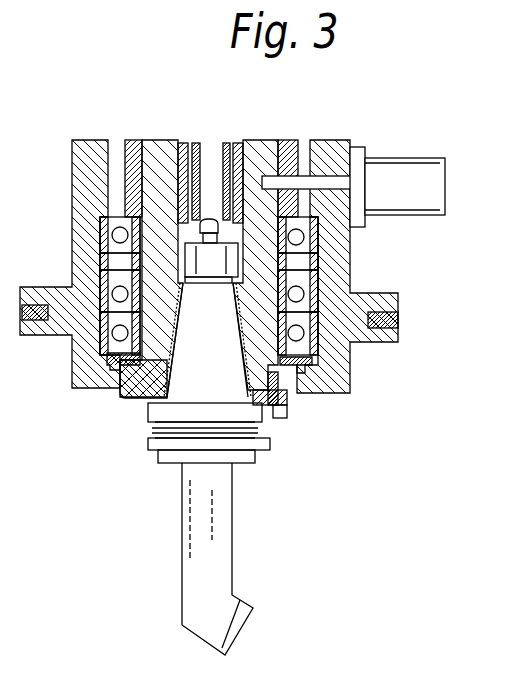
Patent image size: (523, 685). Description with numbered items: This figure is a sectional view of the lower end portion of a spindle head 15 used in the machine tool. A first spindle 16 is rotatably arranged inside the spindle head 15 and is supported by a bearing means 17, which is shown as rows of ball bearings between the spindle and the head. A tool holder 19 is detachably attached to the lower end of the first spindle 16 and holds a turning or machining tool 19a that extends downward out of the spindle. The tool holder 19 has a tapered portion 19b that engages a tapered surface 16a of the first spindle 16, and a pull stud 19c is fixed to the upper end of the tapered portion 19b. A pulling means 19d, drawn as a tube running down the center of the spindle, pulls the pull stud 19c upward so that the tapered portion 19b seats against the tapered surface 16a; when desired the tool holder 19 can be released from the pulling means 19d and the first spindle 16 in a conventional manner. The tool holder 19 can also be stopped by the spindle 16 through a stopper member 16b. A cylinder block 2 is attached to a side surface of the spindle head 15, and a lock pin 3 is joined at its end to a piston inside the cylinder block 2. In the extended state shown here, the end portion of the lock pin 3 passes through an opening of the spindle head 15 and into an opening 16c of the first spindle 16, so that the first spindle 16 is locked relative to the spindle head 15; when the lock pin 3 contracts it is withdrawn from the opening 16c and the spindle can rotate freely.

The cylinder block 2 is at (412, 216).
The lock pin 3 is at (327, 183).
The spindle head 15 is at (77, 183).
The first spindle 16 is at (250, 163).
The tapered surface 16a is at (127, 398).
The stopper member 16b is at (288, 409).
The opening 16c is at (280, 162).
The bearing means 17 is at (100, 235).
The tool holder 19 is at (199, 469).
The turning or machining tool 19a is at (230, 527).
The tapered portion 19b is at (152, 419).
The pull stud 19c is at (225, 255).
The pulling means 19d is at (202, 167).